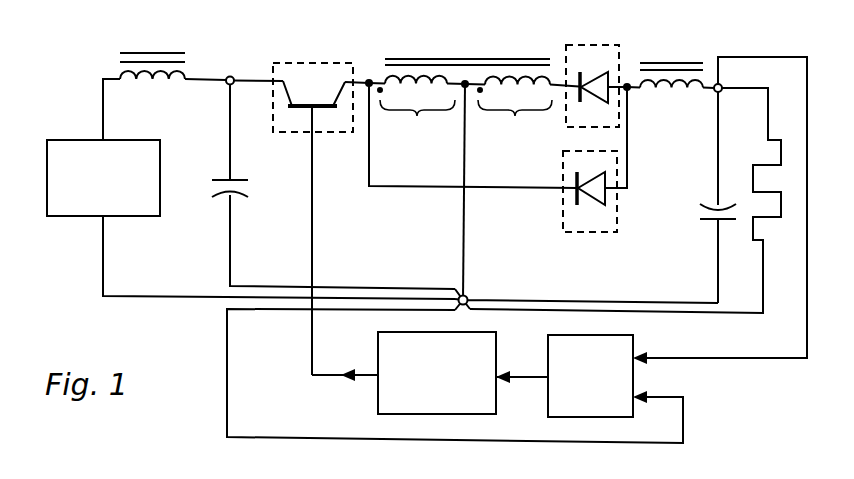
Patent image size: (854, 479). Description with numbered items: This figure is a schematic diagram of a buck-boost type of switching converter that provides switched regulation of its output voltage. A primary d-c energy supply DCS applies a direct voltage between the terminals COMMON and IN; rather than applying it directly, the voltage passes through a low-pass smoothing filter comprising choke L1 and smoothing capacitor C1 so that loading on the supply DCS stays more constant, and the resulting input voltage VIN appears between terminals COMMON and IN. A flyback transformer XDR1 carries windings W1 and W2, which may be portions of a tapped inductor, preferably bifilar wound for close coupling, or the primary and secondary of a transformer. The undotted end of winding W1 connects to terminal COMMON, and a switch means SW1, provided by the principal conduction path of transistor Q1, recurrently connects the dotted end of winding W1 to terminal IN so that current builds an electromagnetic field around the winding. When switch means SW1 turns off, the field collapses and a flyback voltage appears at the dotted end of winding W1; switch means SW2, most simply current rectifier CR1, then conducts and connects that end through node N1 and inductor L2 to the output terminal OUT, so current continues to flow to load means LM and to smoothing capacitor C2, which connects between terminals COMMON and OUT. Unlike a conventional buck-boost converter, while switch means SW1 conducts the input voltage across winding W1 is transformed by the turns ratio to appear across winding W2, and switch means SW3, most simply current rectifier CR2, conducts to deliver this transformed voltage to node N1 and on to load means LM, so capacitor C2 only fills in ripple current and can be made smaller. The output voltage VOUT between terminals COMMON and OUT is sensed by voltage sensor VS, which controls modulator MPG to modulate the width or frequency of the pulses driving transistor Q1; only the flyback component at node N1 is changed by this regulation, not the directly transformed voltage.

The primary d-c energy supply DCS is at (148, 222).
The choke L1 is at (152, 57).
The input terminal IN is at (228, 76).
The input voltage VIN is at (216, 89).
The smoothing capacitor C1 is at (333, 186).
The switch means SW1 is at (335, 62).
The transistor Q1 is at (314, 227).
The flyback transformer XDR1 is at (487, 52).
The winding W1 is at (416, 109).
The winding W2 is at (515, 109).
The switch means SW3 is at (570, 45).
The current rectifier CR2 is at (601, 78).
The node N1 is at (629, 91).
The switch means SW2 is at (565, 210).
The current rectifier CR1 is at (589, 197).
The inductor L2 is at (665, 64).
The output terminal OUT is at (720, 92).
The output voltage VOUT is at (700, 287).
The smoothing capacitor C2 is at (712, 221).
The load means LM is at (771, 222).
The common terminal COMMON is at (467, 297).
The modulator MPG is at (385, 332).
The voltage sensor VS is at (556, 335).